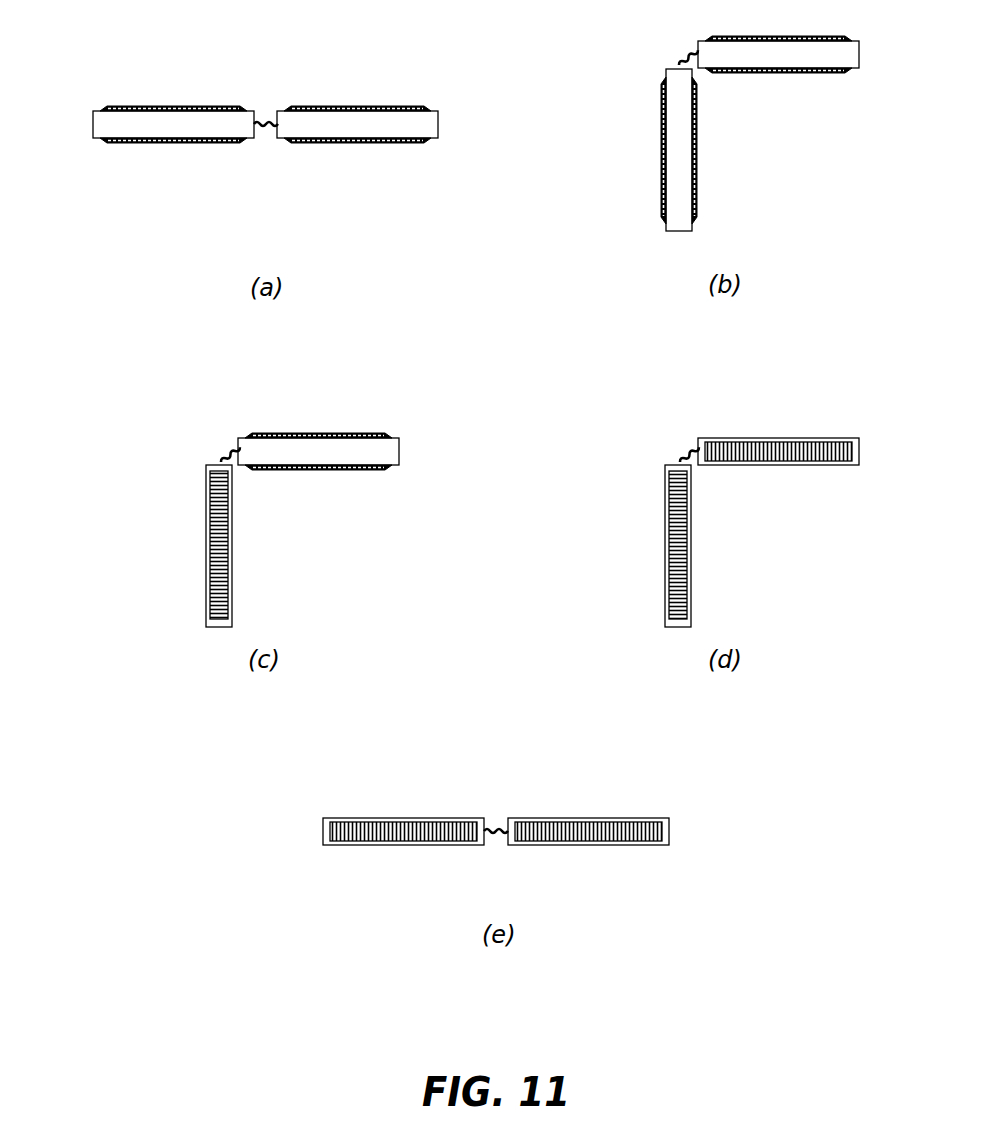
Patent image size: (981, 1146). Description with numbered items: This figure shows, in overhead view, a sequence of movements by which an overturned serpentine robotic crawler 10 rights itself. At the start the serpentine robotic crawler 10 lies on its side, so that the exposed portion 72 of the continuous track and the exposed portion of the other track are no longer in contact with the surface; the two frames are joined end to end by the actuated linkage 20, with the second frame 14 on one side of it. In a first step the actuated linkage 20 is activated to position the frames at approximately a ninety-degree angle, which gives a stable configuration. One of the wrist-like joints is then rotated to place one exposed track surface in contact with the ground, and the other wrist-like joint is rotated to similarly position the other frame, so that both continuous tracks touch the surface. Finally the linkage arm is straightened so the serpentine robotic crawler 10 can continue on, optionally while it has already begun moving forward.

The serpentine robotic crawler 10 is at (283, 107).
The second frame 14 is at (361, 128).
The multiple degree of freedom actuated linkage arm 20 is at (263, 120).
The exposed portion of the continuous track 72 is at (389, 107).